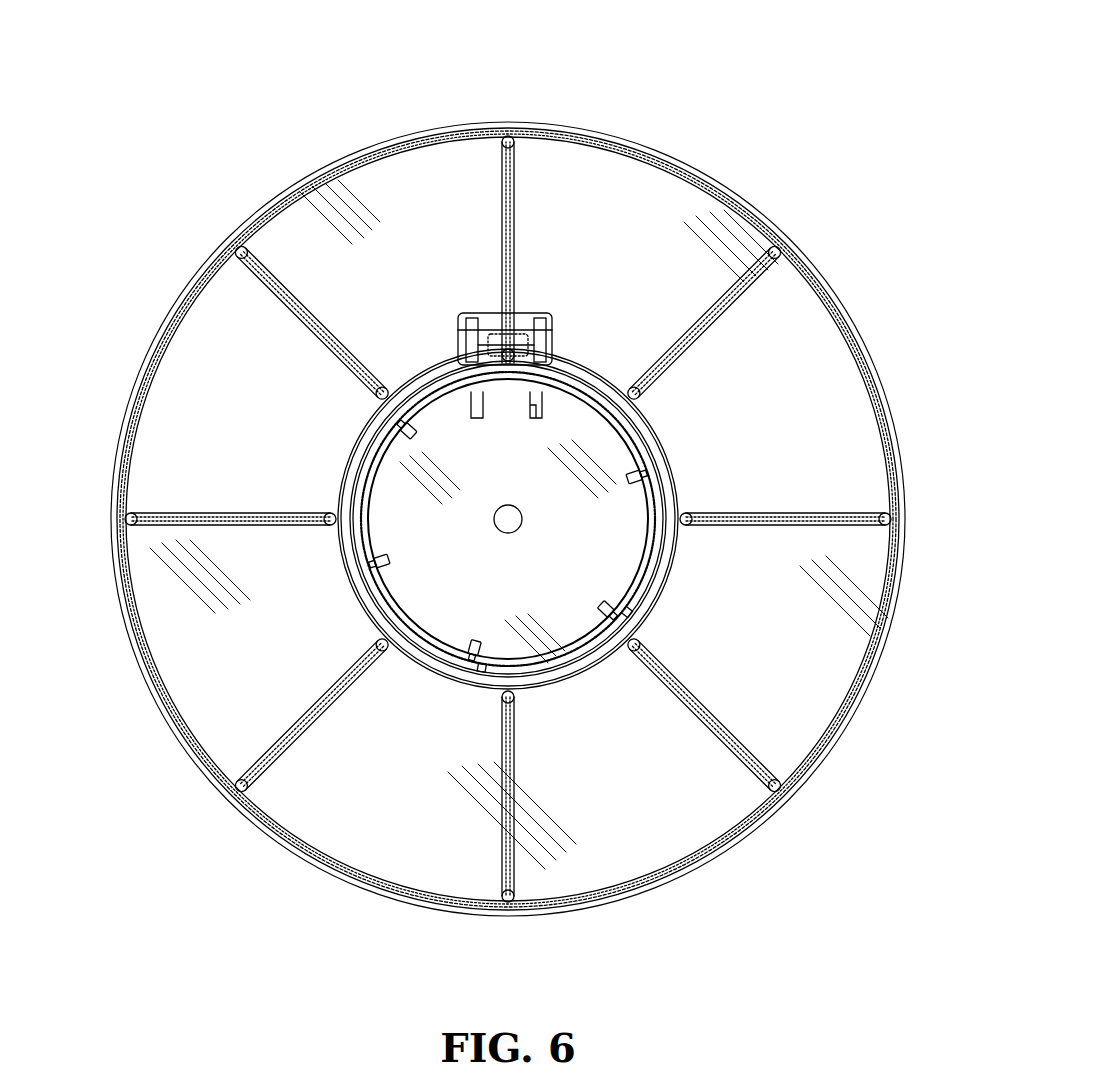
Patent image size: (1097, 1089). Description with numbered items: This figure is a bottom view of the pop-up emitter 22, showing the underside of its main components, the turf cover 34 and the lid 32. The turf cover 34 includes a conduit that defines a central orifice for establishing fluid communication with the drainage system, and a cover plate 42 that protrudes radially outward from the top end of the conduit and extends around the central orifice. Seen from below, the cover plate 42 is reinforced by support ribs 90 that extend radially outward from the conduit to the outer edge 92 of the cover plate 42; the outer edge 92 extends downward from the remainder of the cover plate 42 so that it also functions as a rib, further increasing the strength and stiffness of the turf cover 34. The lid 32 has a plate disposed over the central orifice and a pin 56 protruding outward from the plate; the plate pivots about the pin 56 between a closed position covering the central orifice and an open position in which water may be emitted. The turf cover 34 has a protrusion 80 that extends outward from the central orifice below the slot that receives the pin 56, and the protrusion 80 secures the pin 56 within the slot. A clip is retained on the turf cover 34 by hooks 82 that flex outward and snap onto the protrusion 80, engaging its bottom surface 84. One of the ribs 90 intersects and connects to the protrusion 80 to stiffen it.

The pop-up emitter 22 is at (502, 463).
The lid 32 is at (598, 564).
The turf cover 34 is at (122, 688).
The cover plate 42 is at (539, 519).
The pin 56 is at (508, 354).
The protrusion 80 is at (522, 358).
The hooks 82 is at (462, 330).
The bottom surface 84 is at (484, 356).
The support ribs 90 is at (500, 236).
The outer edge 92 is at (686, 854).